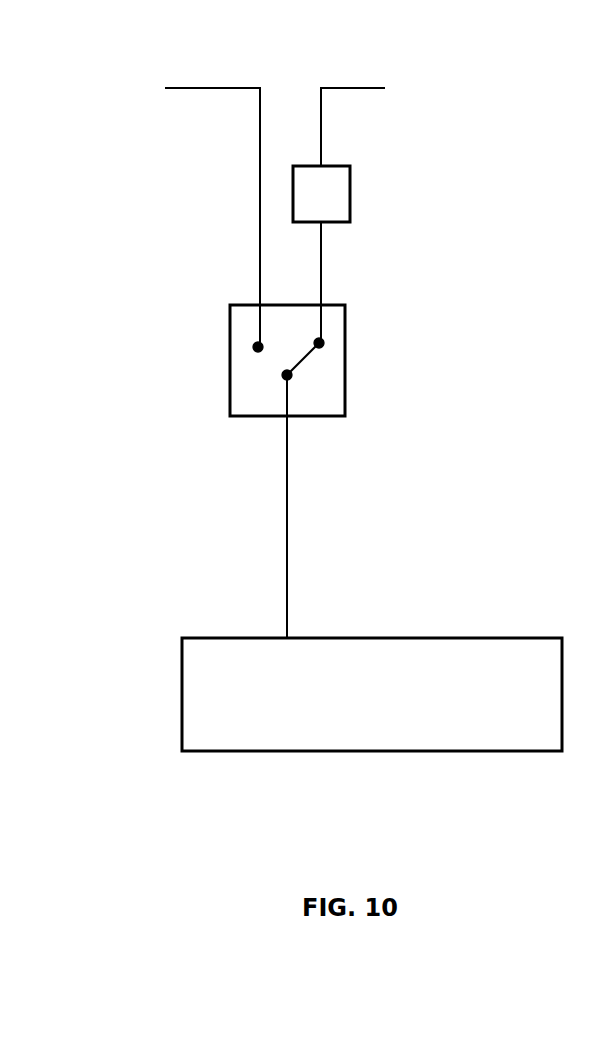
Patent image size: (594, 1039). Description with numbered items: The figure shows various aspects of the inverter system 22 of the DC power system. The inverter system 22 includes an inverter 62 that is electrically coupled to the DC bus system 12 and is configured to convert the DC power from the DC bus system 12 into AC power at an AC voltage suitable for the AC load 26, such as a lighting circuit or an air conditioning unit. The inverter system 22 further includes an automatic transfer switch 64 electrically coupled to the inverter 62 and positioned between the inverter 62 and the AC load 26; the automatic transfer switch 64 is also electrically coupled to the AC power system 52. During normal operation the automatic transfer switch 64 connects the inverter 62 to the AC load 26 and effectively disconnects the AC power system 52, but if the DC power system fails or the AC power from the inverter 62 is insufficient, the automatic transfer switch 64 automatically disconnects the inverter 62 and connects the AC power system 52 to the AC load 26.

The AC power system 52 is at (162, 193).
The DC bus system 12 is at (400, 191).
The inverter system 22 is at (452, 170).
The inverter 62 is at (350, 199).
The automatic transfer switch 64 is at (345, 383).
The AC load 26 is at (372, 694).